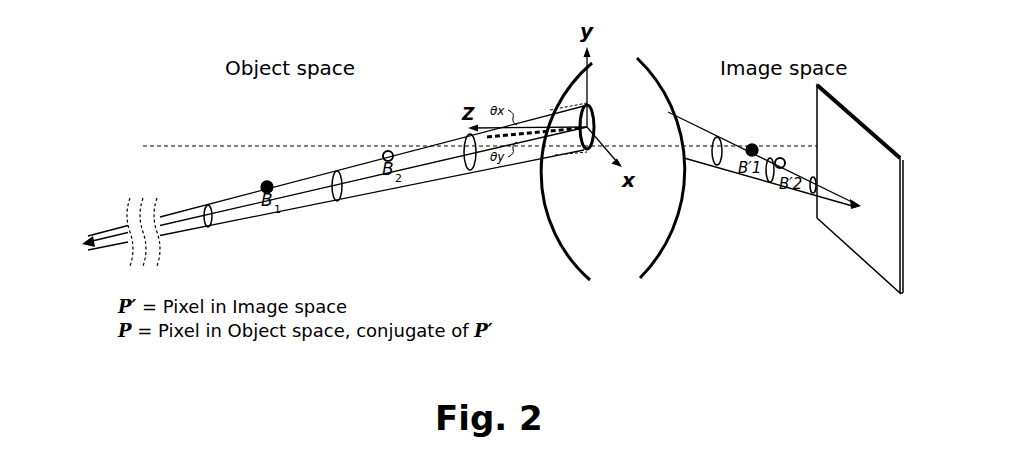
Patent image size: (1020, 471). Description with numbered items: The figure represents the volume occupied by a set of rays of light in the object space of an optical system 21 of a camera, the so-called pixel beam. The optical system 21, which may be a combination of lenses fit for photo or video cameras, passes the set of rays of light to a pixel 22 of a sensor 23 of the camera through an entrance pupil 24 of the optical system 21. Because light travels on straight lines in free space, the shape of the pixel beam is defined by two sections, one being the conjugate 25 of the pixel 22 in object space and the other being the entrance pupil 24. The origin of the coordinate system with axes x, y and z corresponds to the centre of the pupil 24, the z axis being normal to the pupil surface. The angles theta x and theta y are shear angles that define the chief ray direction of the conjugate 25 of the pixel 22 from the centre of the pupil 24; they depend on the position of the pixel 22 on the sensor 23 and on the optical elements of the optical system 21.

The optical system 21 is at (572, 202).
The pixel 22 is at (857, 206).
The sensor 23 is at (880, 262).
The entrance pupil 24 is at (592, 127).
The conjugate of the pixel 25 is at (80, 242).